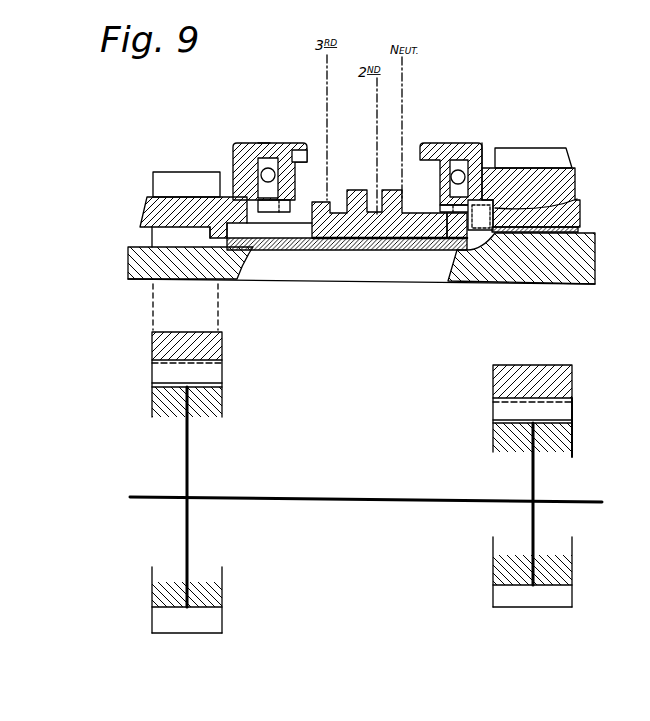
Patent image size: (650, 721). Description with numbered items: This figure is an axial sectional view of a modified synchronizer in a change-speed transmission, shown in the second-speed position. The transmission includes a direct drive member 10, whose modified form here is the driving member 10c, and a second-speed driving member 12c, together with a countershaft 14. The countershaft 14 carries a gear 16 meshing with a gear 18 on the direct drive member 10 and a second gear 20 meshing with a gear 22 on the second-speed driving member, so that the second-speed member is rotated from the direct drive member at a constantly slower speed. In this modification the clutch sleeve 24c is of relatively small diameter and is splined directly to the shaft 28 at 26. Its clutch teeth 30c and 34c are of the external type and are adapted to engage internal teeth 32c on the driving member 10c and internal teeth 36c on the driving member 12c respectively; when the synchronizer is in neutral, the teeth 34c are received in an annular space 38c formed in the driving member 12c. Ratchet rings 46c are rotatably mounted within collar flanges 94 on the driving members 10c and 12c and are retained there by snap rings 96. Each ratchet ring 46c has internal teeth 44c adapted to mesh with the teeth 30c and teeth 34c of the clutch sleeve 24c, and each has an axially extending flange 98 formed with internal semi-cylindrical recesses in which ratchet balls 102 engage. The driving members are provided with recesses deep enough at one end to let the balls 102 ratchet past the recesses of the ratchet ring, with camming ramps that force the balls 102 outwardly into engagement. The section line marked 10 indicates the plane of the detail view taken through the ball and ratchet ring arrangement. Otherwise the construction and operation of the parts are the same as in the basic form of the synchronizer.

The direct drive member 10 is at (452, 143).
The direct driving member 10c is at (140, 218).
The second-speed driving member 12c is at (568, 177).
The countershaft 14 is at (358, 497).
The gear 16 is at (155, 393).
The gear 18 is at (160, 175).
The second gear 20 is at (570, 436).
The gear 22 is at (568, 150).
The clutch sleeve 24c is at (372, 240).
The spline connection 26 is at (338, 240).
The shaft 28 is at (578, 262).
The clutch teeth 30c is at (327, 202).
The internal teeth 32c is at (253, 232).
The clutch teeth 34c is at (437, 255).
The internal teeth 36c is at (430, 254).
The annular space 38c is at (572, 200).
The internal teeth 44c is at (284, 213).
The ratchet ring 46c is at (277, 145).
The collar flange 94 is at (290, 143).
The snap ring 96 is at (302, 158).
The axially extending flange 98 is at (263, 143).
The ratchet ball 102 is at (474, 146).